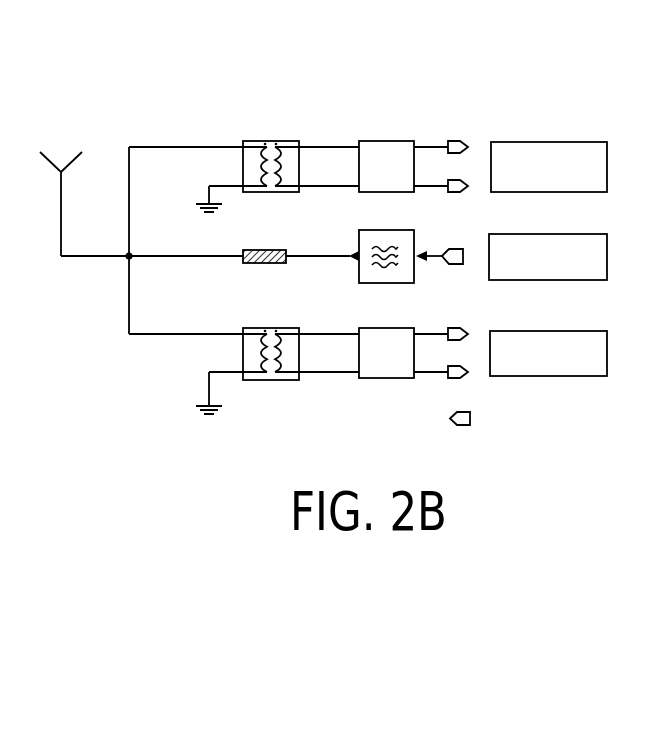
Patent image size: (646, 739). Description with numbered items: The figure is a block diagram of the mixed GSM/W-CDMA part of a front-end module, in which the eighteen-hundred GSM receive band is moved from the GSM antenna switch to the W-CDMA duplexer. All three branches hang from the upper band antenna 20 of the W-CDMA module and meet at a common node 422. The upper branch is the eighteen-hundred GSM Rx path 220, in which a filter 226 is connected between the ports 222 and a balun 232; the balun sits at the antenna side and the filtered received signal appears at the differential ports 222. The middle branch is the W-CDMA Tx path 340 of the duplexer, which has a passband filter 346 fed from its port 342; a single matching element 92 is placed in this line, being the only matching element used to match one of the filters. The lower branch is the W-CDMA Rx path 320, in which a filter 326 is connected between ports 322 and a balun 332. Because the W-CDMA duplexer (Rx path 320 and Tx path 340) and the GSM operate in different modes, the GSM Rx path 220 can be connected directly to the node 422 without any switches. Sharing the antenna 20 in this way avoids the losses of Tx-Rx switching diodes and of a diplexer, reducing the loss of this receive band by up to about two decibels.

The antenna 20 is at (60, 193).
The node 422 is at (128, 248).
The balun 232 is at (270, 140).
The filter 226 is at (385, 140).
The ports 222 is at (462, 182).
The 1805–1880 MHz Rx path 220 is at (483, 135).
The matching element 92 is at (262, 249).
The passband filter 346 is at (385, 230).
The 1920–1980 MHz Tx path 340 is at (475, 233).
The port 342 is at (455, 264).
The balun 332 is at (265, 327).
The filter 326 is at (385, 378).
The ports 322 is at (462, 369).
The 2110–2170 MHz Rx path 320 is at (478, 325).